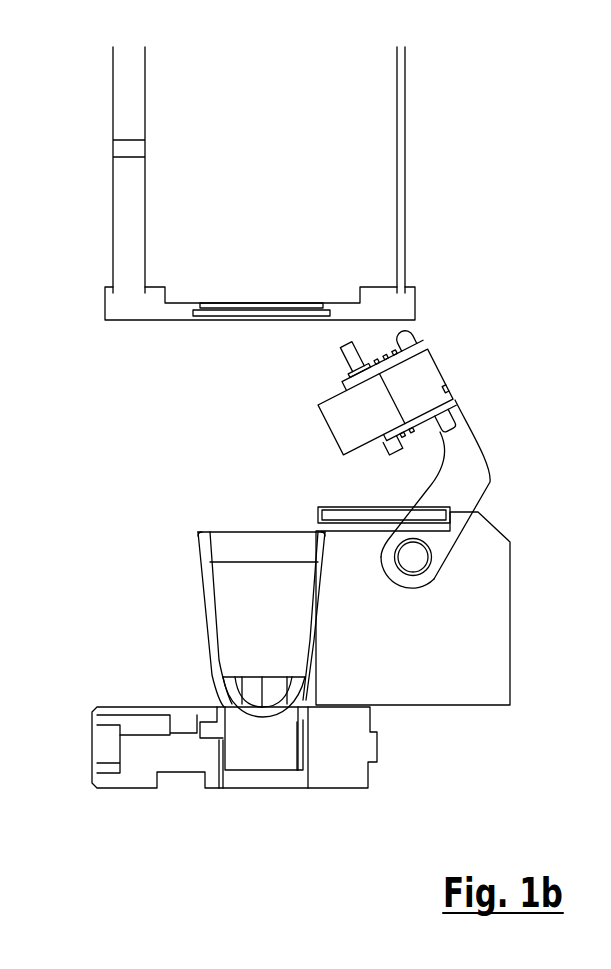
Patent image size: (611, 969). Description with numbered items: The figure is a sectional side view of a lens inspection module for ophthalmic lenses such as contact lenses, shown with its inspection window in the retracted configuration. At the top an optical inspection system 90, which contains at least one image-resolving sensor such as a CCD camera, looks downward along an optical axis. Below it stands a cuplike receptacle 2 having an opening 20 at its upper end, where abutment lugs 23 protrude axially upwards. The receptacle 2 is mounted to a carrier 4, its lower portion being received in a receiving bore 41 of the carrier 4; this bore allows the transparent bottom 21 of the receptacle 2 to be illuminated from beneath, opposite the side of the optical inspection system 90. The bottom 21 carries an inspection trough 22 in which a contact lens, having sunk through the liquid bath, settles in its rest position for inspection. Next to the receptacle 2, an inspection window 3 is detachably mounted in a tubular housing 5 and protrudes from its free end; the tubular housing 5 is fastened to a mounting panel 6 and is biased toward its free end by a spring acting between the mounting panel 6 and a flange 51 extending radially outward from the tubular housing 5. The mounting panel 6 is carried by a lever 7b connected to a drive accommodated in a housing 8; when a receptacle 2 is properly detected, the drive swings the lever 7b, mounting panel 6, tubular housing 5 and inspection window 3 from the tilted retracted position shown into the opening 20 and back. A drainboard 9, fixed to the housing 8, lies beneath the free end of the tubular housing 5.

The optical inspection system 90 is at (118, 173).
The mounting panel 6 is at (412, 332).
The flange 51 is at (342, 358).
The tubular housing 5 is at (453, 397).
The lever 7b is at (482, 458).
The inspection window 3 is at (353, 447).
The drainboard 9 is at (452, 511).
The housing 8 is at (498, 640).
The abutment lugs 23 is at (200, 528).
The opening 20 is at (241, 534).
The receptacle 2 is at (211, 617).
The inspection trough 22 is at (218, 698).
The carrier 4 is at (97, 746).
The receiving bore 41 is at (220, 748).
The bottom 21 is at (297, 731).